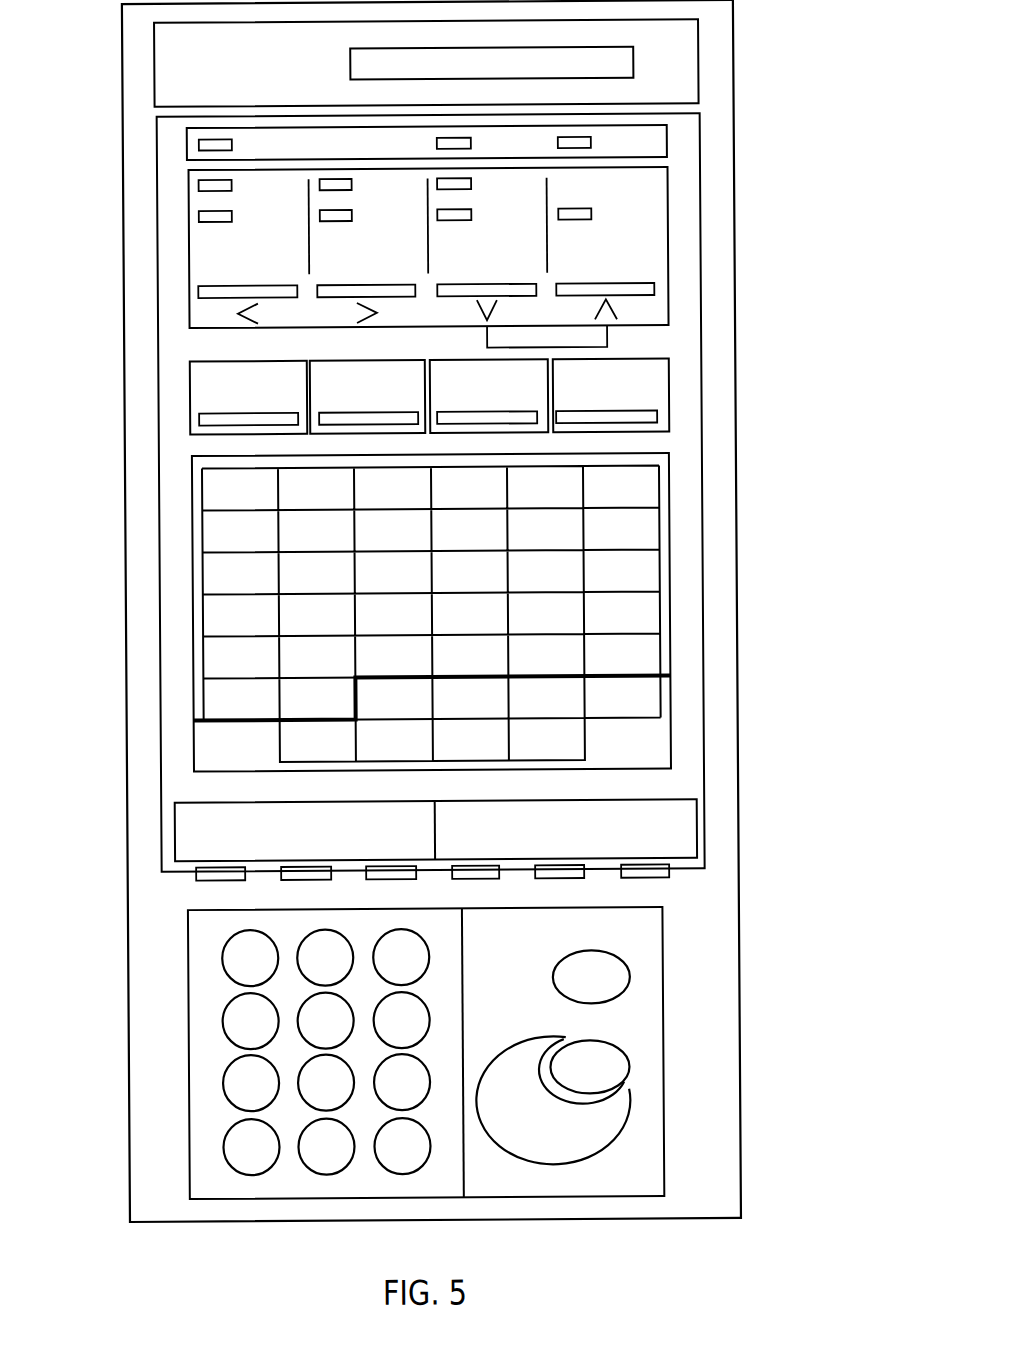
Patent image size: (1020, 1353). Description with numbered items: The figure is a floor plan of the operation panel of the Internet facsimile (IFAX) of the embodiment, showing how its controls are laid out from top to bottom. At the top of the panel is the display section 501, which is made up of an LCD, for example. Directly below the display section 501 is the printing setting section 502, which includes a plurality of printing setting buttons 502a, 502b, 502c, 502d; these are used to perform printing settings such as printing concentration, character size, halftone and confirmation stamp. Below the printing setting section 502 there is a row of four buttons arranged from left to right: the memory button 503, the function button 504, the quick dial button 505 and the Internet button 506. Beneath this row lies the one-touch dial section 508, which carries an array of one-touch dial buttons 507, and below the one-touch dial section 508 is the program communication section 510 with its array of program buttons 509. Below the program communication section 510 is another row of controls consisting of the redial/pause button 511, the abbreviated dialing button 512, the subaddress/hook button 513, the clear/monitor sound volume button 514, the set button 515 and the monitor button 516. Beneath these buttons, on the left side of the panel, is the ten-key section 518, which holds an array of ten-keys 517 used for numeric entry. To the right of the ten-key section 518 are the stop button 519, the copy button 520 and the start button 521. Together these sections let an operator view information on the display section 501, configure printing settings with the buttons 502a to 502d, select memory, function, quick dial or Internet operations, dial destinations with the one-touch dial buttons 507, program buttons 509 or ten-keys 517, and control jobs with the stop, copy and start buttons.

The display section 501 is at (637, 63).
The printing setting section 502 is at (671, 177).
The printing setting button 502a is at (216, 296).
The printing setting button 502b is at (342, 296).
The printing setting button 502c is at (520, 284).
The printing setting button 502d is at (630, 285).
The memory button 503 is at (212, 425).
The function button 504 is at (341, 427).
The quick dial button 505 is at (519, 409).
The Internet button 506 is at (631, 412).
The one-touch dial buttons 507 is at (315, 490).
The one-touch dial section 508 is at (671, 540).
The program buttons 509 is at (463, 702).
The program communication section 510 is at (671, 723).
The redial/pause button 511 is at (215, 878).
The abbreviated dialing button 512 is at (293, 878).
The subaddress/hook button 513 is at (378, 878).
The clear/monitor sound volume button 514 is at (633, 881).
The set button 515 is at (568, 880).
The monitor button 516 is at (489, 880).
The ten-keys 517 is at (232, 978).
The ten-key section 518 is at (187, 1168).
The stop button 519 is at (614, 999).
The copy button 520 is at (628, 1085).
The start button 521 is at (579, 1146).